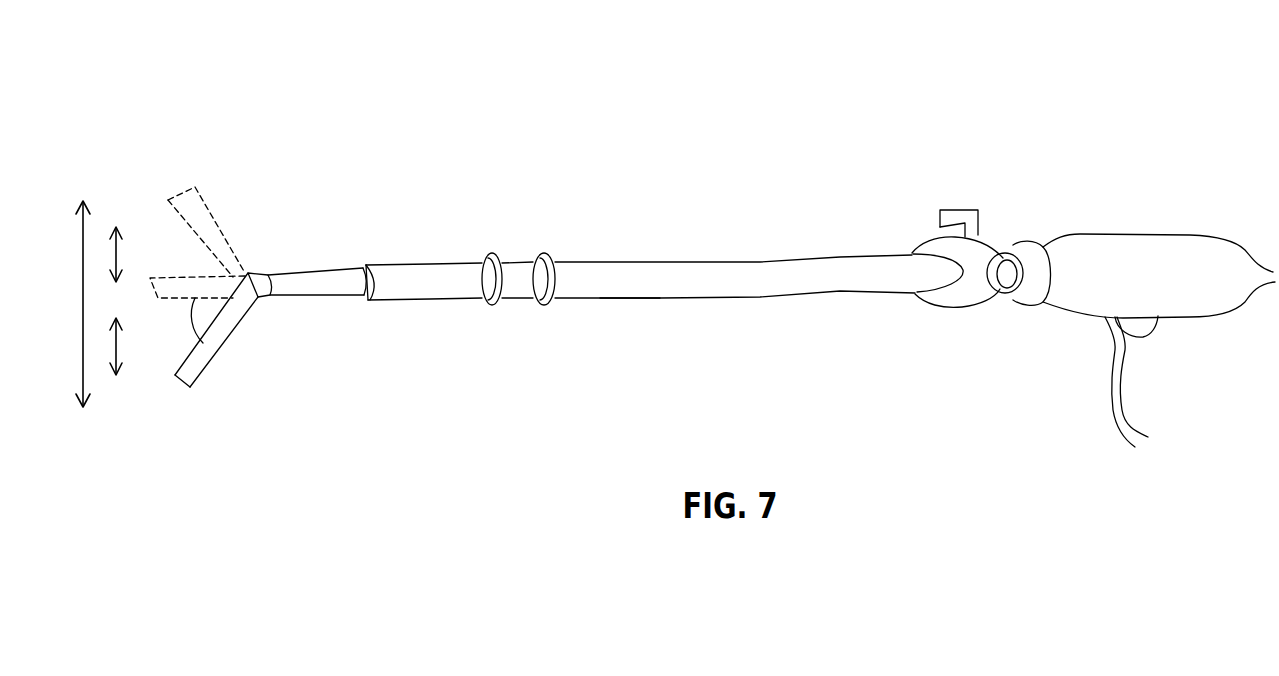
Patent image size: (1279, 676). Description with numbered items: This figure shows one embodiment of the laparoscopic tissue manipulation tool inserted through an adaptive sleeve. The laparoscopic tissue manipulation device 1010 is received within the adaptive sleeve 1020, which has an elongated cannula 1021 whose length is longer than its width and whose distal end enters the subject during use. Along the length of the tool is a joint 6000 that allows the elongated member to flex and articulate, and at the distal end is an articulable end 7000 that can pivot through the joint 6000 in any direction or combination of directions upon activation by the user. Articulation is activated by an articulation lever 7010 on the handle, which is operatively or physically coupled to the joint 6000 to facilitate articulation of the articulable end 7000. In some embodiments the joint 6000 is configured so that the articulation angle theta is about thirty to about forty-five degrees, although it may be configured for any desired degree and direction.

The articulable end 7000 is at (199, 139).
The joint 6000 is at (267, 293).
The laparoscopic tissue manipulation device 1010 is at (344, 276).
The adaptive sleeve 1020 is at (640, 212).
The elongated cannula 1021 is at (667, 283).
The articulation lever 7010 is at (964, 220).